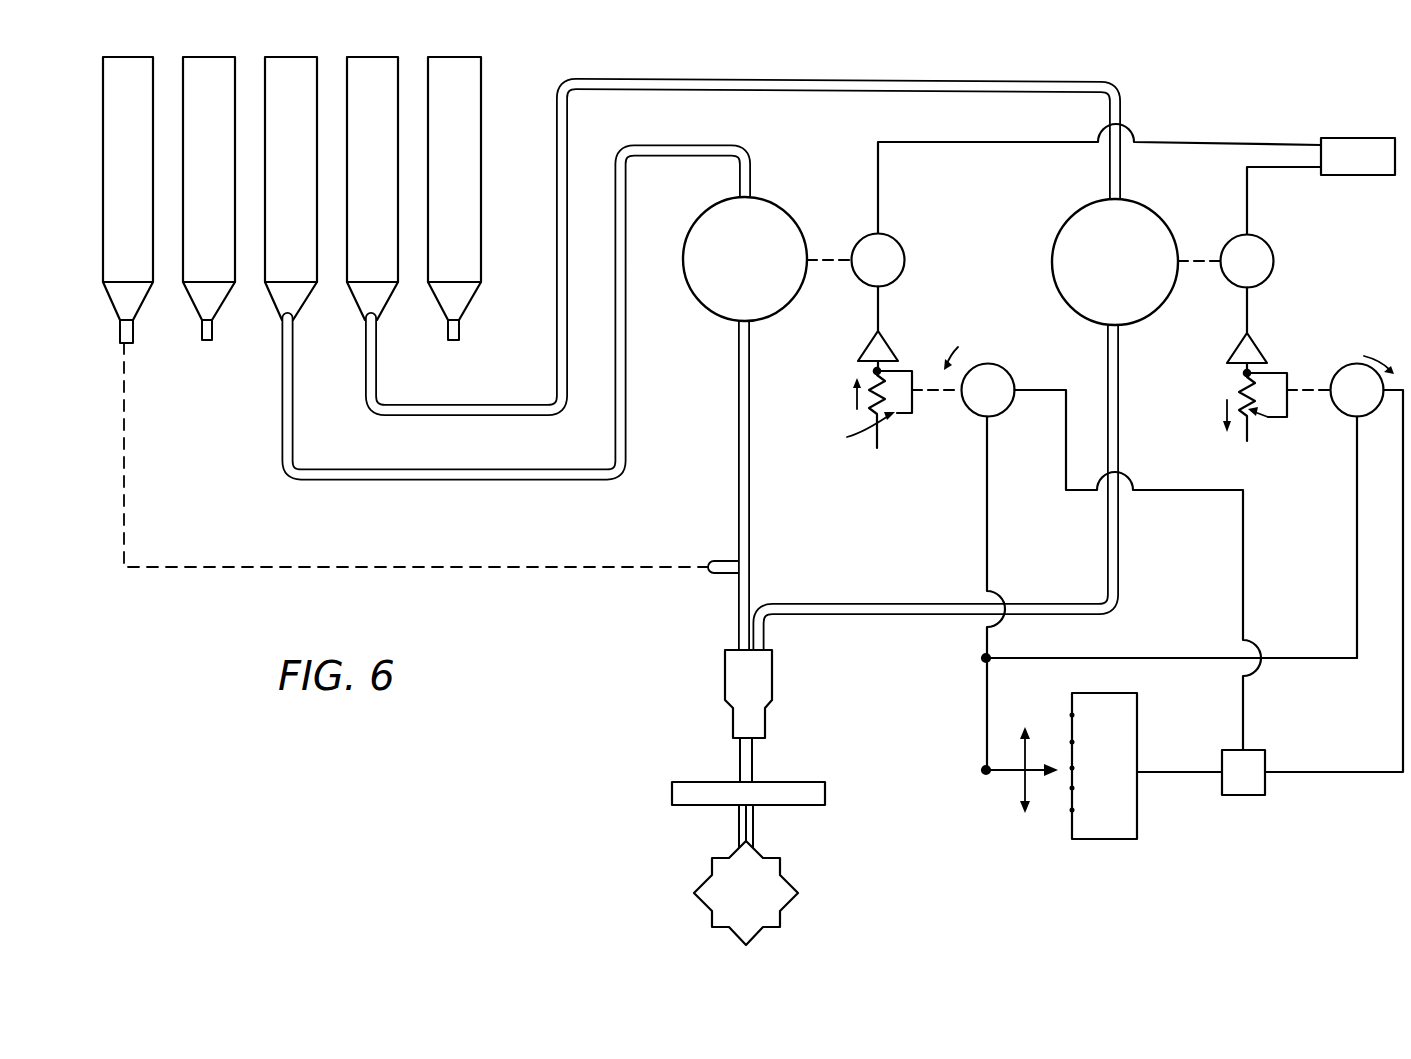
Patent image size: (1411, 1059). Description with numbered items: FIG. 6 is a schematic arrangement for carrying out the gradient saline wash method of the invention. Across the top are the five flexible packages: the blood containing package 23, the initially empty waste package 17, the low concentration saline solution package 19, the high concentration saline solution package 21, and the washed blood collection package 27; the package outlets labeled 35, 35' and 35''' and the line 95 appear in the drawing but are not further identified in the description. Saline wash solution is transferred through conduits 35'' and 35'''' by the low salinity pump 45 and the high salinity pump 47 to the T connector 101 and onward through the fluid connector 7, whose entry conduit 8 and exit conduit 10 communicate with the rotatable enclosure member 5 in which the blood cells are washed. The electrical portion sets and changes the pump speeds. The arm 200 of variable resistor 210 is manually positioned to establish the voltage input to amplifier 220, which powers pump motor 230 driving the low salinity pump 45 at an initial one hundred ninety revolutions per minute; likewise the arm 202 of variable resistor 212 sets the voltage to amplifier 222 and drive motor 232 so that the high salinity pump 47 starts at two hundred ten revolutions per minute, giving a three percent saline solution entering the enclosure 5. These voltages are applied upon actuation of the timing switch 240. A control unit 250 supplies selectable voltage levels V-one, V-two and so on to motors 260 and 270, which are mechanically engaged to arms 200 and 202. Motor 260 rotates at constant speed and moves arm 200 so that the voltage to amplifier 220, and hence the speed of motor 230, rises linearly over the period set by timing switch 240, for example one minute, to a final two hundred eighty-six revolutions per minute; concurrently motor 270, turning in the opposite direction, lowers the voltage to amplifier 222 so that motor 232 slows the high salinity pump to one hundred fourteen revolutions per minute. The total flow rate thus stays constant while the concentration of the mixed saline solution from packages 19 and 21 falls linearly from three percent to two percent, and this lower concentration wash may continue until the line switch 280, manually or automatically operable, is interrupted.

The blood containing package 23 is at (130, 57).
The waste package 17 is at (217, 57).
The low concentration saline solution containing package 19 is at (309, 57).
The high concentration saline solution containing package 21 is at (391, 57).
The washed blood collection package 27 is at (462, 57).
The blood supply bag outlet 35 is at (429, 446).
The waste collection bag inlet 35' is at (228, 337).
The conduit 35'' is at (517, 313).
The conduit 35'''' is at (743, 369).
The blood collection bag inlet 35''' is at (478, 337).
The low salinity pump 45 is at (683, 270).
The high salinity pump 47 is at (1053, 269).
The supply tube 95 is at (738, 473).
The T connector 101 is at (772, 681).
The fluid connector 7 is at (825, 790).
The entry conduit 8 is at (756, 833).
The exit conduit 10 is at (738, 833).
The rotatable enclosure means 5 is at (789, 880).
The arm of variable resistor 200 is at (899, 385).
The arm of variable resistor 202 is at (1276, 385).
The variable resistor 210 is at (852, 425).
The variable resistor 212 is at (1245, 386).
The amplifier 220 is at (894, 340).
The amplifier 222 is at (1262, 348).
The pump motor 230 is at (896, 243).
The drive motor 232 is at (1270, 247).
The timing switch 240 is at (1265, 760).
The control unit 250 is at (1138, 817).
The motor 260 is at (1010, 374).
The motor 270 is at (1339, 413).
The line switch 280 is at (1378, 112).